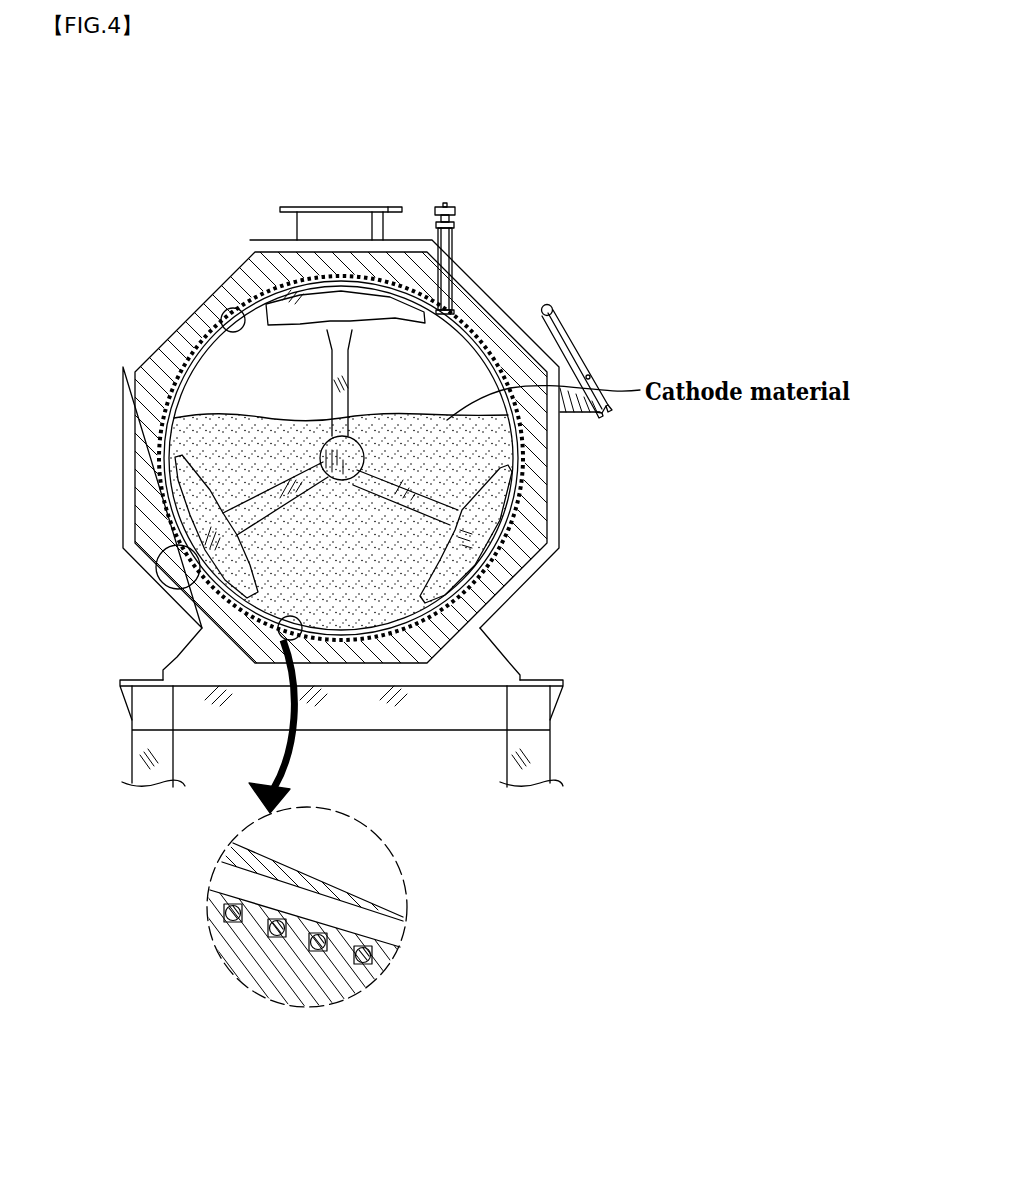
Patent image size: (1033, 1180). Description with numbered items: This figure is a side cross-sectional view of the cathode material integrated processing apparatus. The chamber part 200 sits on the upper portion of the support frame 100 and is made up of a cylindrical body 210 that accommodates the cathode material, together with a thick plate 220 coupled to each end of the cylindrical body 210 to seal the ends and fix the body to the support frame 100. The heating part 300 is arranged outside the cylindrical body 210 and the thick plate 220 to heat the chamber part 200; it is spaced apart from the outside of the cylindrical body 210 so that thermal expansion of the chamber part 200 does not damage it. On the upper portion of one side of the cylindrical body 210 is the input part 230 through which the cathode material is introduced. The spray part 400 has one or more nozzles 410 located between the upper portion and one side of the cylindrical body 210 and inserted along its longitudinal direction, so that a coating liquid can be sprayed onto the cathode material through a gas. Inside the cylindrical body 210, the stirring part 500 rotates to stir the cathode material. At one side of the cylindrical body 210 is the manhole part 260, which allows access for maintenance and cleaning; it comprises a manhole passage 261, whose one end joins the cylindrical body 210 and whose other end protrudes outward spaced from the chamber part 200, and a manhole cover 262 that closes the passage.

The support frame 100 is at (575, 745).
The chamber part 200 is at (187, 165).
The cylindrical body 210 is at (223, 362).
The thick plate 220 is at (172, 323).
The input part 230 is at (338, 207).
The manhole part 260 is at (575, 318).
The manhole passage 261 is at (508, 323).
The manhole cover 262 is at (568, 349).
The heating part 300 is at (475, 333).
The spray part 400 is at (458, 233).
The nozzle 410 is at (440, 215).
The stirring part 500 is at (477, 527).